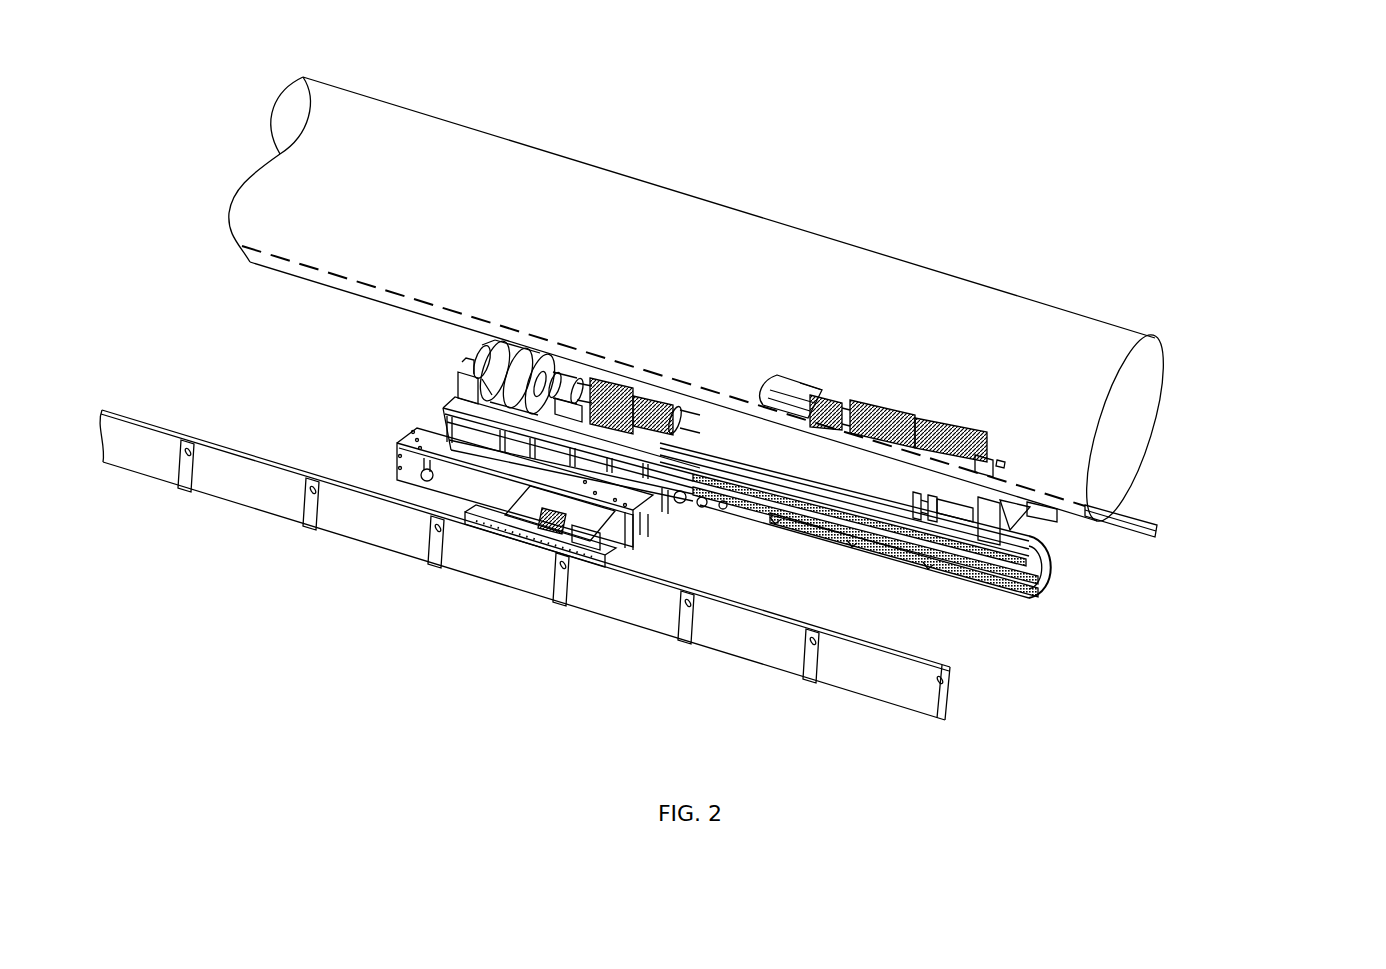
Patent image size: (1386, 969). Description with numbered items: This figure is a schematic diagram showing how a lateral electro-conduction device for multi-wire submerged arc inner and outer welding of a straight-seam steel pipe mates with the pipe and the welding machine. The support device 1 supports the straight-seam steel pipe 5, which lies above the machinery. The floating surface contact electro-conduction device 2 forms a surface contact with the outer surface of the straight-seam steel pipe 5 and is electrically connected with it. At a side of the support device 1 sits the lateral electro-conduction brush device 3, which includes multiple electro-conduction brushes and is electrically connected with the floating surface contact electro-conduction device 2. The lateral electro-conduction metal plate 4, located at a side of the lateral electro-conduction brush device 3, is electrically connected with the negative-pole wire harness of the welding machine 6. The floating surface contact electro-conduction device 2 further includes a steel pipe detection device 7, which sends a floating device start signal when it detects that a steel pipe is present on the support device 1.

The support device 1 is at (517, 393).
The floating surface contact electro-conduction device 2 is at (1057, 570).
The lateral electro-conduction brush device 3 is at (537, 487).
The lateral electro-conduction metal plate 4 is at (772, 660).
The straight-seam steel pipe 5 is at (1103, 428).
The welding machine 6 is at (800, 380).
The steel pipe detection device 7 is at (1002, 462).